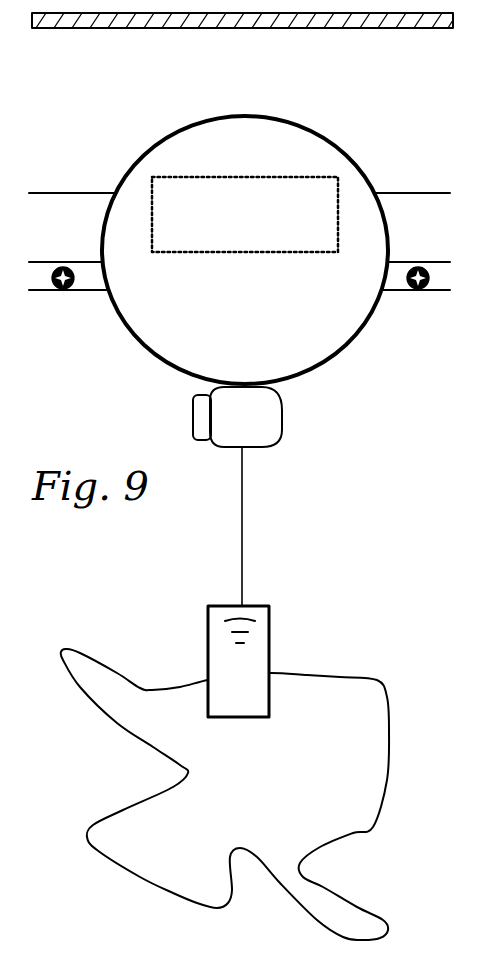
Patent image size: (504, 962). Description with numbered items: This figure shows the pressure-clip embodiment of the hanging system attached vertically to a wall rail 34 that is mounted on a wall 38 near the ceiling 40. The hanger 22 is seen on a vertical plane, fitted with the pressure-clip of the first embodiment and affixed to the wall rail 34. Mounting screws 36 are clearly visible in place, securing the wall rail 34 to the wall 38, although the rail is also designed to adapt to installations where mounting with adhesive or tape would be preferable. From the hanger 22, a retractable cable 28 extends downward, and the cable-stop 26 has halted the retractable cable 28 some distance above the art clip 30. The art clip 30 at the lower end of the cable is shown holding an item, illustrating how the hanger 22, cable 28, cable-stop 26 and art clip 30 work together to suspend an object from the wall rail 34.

The hanger 22 is at (162, 140).
The cable-stop 26 is at (284, 421).
The retractable cable 28 is at (243, 518).
The art clip 30 is at (275, 638).
The wall rail 34 is at (455, 190).
The mounting screws 36 is at (58, 292).
The wall 38 is at (283, 73).
The ceiling 40 is at (315, 27).